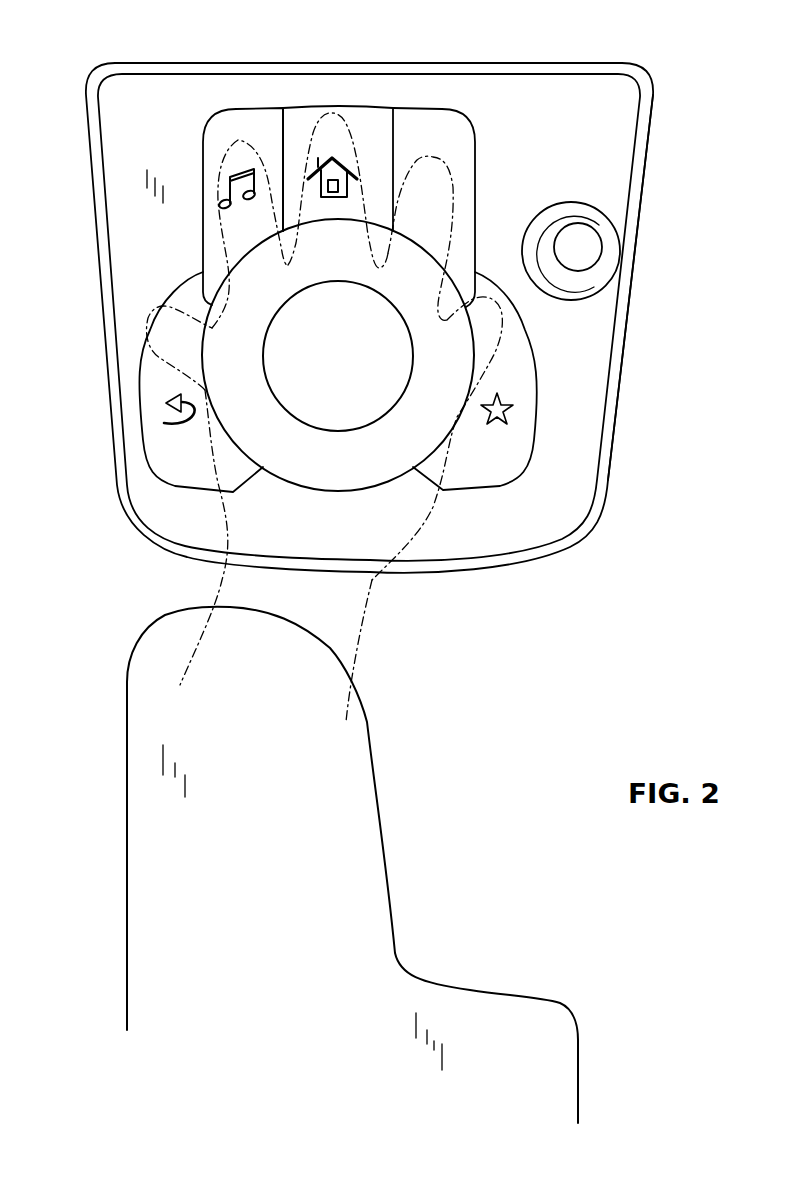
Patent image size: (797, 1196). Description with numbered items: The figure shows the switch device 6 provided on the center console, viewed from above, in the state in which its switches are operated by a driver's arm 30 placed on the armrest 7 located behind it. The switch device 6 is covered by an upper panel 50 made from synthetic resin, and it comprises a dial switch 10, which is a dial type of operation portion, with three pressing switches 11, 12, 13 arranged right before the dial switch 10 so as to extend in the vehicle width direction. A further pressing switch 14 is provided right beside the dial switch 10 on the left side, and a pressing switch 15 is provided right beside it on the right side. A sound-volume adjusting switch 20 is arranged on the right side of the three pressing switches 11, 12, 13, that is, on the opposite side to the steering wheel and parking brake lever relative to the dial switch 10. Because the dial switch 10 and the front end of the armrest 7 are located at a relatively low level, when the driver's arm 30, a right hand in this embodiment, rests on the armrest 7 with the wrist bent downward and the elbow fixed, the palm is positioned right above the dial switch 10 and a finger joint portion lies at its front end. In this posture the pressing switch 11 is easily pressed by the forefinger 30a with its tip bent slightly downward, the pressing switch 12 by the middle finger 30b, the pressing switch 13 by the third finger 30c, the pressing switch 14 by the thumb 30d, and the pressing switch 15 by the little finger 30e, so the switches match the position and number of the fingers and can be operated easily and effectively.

The switch device 6 is at (630, 403).
The armrest 7 is at (372, 850).
The dial switch 10 is at (377, 462).
The pressing switch 11 is at (250, 122).
The pressing switch 12 is at (307, 115).
The pressing switch 13 is at (428, 122).
The pressing switch 14 is at (153, 388).
The pressing switch 15 is at (513, 443).
The sound-volume adjusting switch 20 is at (612, 253).
The driver's arm 30 is at (372, 609).
The forefinger 30a is at (220, 153).
The middle finger 30b is at (351, 121).
The third finger 30c is at (462, 215).
The thumb 30d is at (140, 358).
The little finger 30e is at (507, 342).
The upper panel 50 is at (618, 158).